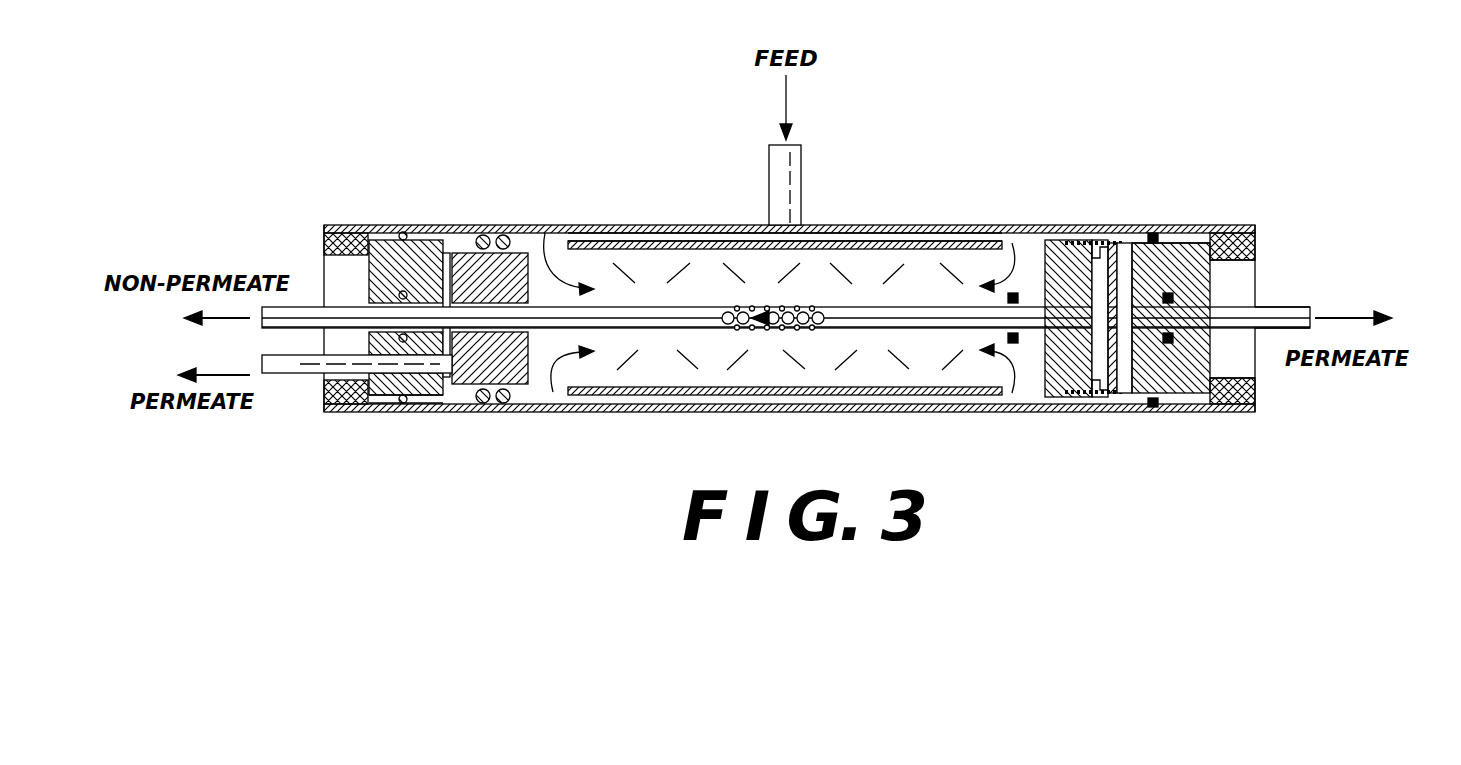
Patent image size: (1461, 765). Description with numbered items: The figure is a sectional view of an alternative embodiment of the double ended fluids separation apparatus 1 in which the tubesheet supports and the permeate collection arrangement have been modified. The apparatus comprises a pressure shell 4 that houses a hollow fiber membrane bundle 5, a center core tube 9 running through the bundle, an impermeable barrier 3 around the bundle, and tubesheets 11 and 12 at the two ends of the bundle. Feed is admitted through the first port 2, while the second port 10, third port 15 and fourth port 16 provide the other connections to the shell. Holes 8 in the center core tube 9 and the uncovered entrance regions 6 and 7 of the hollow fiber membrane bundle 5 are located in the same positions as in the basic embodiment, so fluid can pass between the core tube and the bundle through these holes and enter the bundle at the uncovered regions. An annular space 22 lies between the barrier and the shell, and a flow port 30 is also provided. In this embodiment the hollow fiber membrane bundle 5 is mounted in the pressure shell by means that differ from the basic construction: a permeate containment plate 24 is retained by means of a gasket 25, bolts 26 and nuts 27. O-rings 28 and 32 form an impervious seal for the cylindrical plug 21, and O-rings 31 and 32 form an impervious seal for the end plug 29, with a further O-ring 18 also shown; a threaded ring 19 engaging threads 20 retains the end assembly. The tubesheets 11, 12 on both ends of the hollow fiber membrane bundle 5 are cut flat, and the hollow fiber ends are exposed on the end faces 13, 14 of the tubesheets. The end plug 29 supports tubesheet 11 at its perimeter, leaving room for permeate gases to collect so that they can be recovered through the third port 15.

The double ended fluids separation apparatus 1 is at (704, 418).
The first port 2 is at (800, 193).
The impermeable barrier 3 is at (870, 242).
The pressure shell 4 is at (973, 235).
The hollow fiber membrane bundle 5 is at (912, 275).
The uncovered entrance region 6 is at (1037, 242).
The uncovered entrance region 7 is at (545, 233).
The holes 8 is at (787, 307).
The center core tube 9 is at (572, 329).
The second port 10 is at (282, 312).
The tubesheet 11 is at (537, 412).
The tubesheet 12 is at (1062, 413).
The end face 13 is at (463, 383).
The end face 14 is at (1115, 407).
The third port 15 is at (283, 376).
The fourth port 16 is at (1253, 408).
The O-ring 18 is at (483, 236).
The threaded ring 19 is at (1283, 246).
The threads 20 is at (1258, 228).
The cylindrical plug 21 is at (1197, 405).
The annular space 22 is at (637, 241).
The permeate containment plate 24 is at (1060, 243).
The gasket 25 is at (1150, 245).
The bolts 26 is at (1085, 243).
The nuts 27 is at (1130, 245).
The O-ring 28 is at (1175, 300).
The end plug 29 is at (420, 232).
The flow port 30 is at (1192, 245).
The O-ring 31 is at (403, 397).
The O-ring 32 is at (423, 413).